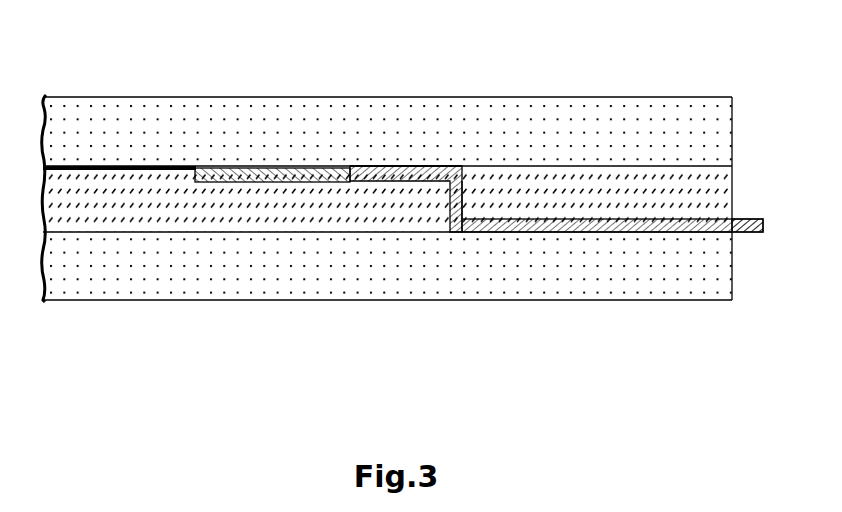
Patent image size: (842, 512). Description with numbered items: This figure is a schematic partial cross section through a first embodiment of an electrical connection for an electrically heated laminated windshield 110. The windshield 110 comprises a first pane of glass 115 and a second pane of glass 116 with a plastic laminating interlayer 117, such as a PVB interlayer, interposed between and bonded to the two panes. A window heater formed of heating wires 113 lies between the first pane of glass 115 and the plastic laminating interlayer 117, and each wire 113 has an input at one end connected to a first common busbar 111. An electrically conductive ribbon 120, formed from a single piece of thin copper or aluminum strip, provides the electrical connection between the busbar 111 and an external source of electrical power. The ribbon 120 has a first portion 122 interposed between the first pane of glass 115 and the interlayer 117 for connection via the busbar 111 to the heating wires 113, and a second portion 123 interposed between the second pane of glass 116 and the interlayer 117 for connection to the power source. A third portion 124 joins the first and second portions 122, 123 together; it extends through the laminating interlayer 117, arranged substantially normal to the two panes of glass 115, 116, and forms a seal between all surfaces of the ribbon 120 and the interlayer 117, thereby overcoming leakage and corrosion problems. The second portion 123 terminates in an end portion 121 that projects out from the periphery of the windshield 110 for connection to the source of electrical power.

The electrically heated windshield 110 is at (192, 98).
The first common busbar 111 is at (268, 182).
The heating wires 113 is at (97, 166).
The first pane of glass 115 is at (315, 97).
The second pane of glass 116 is at (470, 300).
The plastic laminating interlayer 117 is at (350, 232).
The electrically conductive ribbon 120 is at (430, 166).
The end portion 121 is at (747, 219).
The first portion 122 is at (398, 165).
The second portion 123 is at (602, 220).
The third portion 124 is at (463, 193).